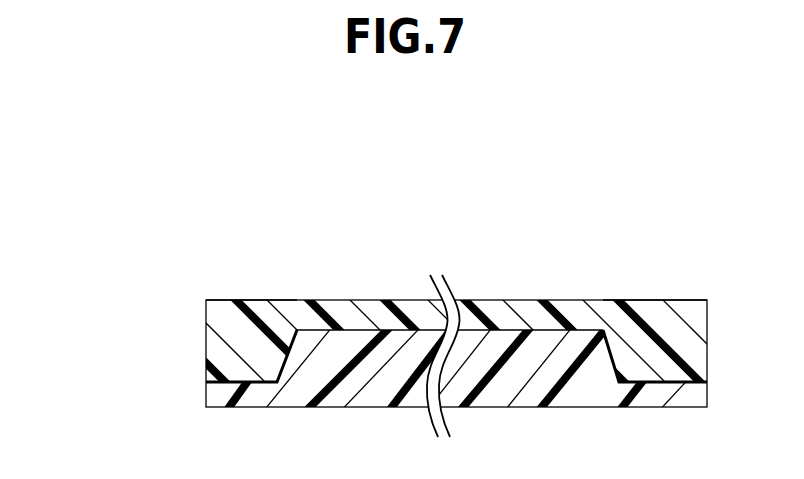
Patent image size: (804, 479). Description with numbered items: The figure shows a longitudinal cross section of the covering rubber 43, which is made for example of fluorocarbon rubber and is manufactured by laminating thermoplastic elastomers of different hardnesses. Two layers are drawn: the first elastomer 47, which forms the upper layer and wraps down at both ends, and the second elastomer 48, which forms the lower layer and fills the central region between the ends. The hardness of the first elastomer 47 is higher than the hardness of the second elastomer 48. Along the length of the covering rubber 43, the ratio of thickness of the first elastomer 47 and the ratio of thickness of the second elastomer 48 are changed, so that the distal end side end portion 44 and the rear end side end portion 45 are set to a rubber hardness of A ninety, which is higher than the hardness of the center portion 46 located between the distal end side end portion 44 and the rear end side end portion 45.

The covering rubber 43 is at (423, 265).
The distal end side end portion 44 is at (258, 284).
The rear end side end portion 45 is at (652, 284).
The center portion 46 is at (504, 284).
The first elastomer 47 is at (218, 348).
The second elastomer 48 is at (218, 397).